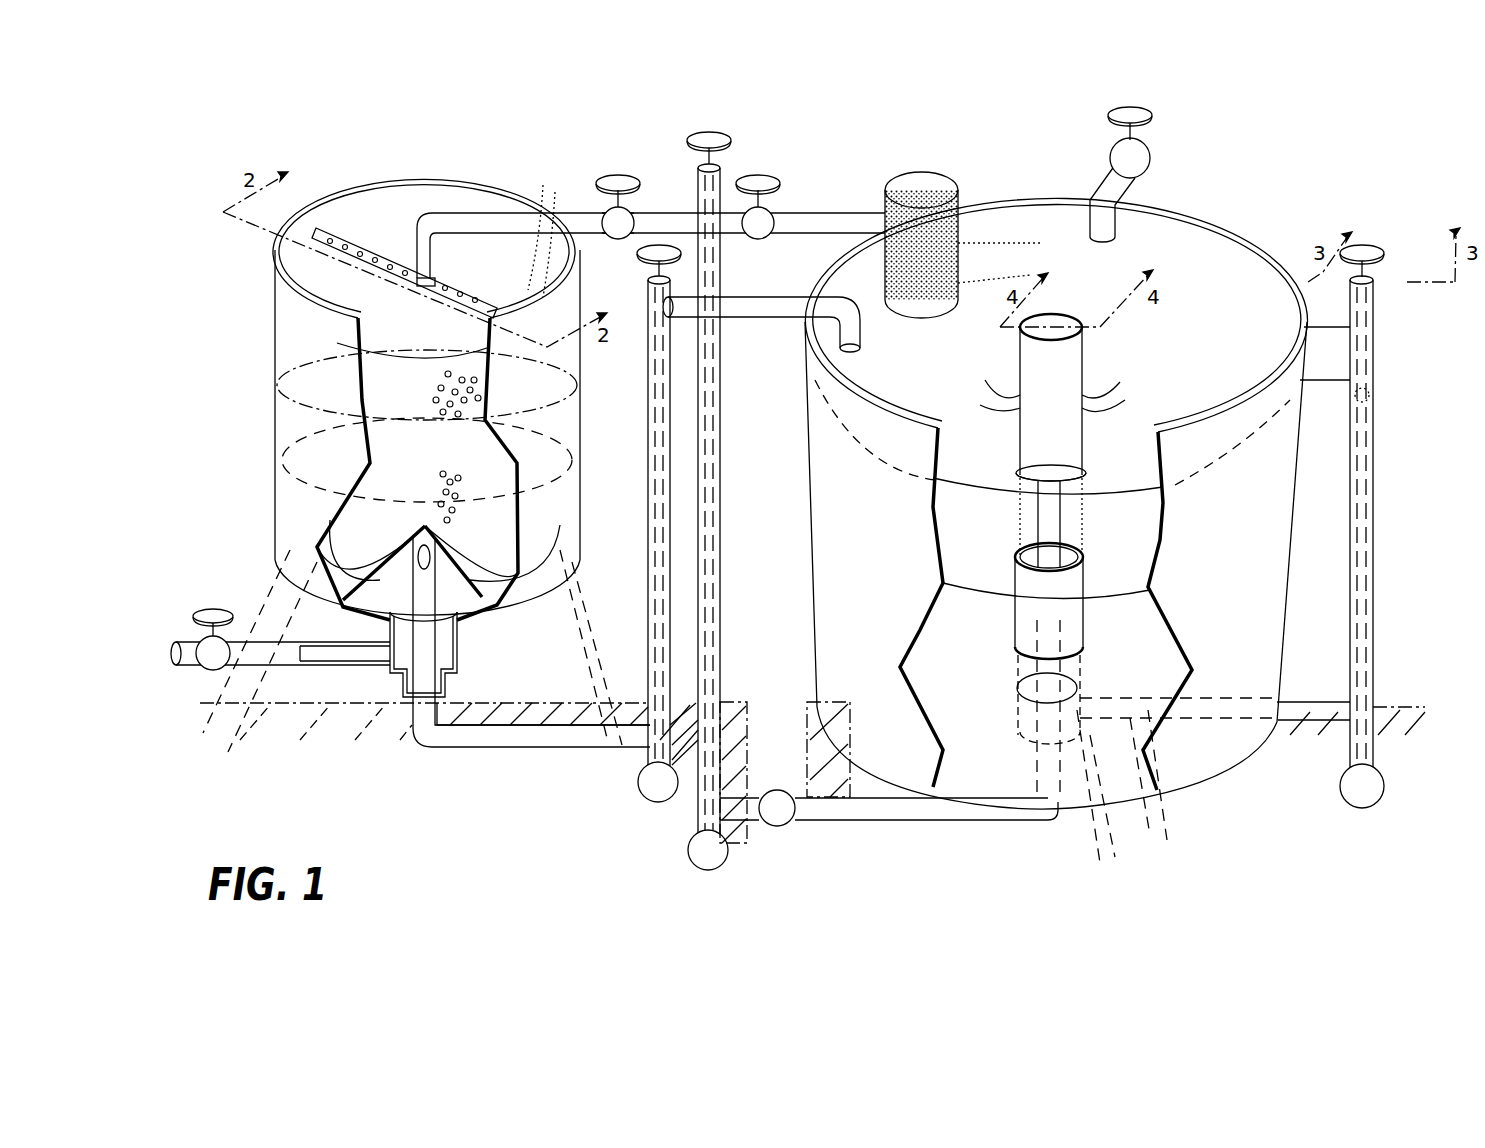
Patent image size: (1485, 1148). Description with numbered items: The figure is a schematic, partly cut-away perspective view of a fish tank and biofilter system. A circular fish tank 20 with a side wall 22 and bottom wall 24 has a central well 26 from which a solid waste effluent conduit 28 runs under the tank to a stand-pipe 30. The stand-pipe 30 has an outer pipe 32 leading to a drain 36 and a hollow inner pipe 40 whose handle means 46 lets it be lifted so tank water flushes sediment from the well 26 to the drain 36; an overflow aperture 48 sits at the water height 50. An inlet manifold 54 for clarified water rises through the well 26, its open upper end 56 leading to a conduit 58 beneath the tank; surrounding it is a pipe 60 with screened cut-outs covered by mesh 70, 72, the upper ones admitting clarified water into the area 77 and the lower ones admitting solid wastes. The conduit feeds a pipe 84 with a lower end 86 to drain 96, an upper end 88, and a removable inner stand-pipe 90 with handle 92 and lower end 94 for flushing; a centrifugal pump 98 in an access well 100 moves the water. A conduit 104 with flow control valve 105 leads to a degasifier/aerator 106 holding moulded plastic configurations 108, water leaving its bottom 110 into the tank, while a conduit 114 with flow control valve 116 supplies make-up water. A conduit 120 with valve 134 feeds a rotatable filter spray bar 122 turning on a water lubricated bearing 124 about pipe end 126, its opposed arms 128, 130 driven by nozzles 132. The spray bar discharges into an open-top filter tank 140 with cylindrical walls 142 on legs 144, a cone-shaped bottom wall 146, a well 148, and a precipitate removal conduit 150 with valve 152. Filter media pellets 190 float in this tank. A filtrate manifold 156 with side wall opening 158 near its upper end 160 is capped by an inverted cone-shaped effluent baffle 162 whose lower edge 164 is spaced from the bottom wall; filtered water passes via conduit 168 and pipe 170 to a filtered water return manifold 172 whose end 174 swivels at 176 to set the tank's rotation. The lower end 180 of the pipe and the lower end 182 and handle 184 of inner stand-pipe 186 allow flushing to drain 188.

The fish tank 20 is at (1217, 204).
The side wall 22 is at (1010, 228).
The bottom wall 24 is at (1228, 770).
The central well 26 is at (1100, 858).
The solid waste effluent conduit 28 is at (1167, 835).
The stand-pipe 30 is at (1387, 511).
The outer pipe 32 is at (1375, 445).
The drain 36 is at (1360, 800).
The inner pipe 40 is at (1375, 330).
The handle means 46 is at (1368, 247).
The overflow aperture 48 is at (1370, 395).
The height of water 50 is at (1230, 293).
The inlet manifold 54 is at (1020, 675).
The open upper end 56 is at (1085, 580).
The conduit 58 is at (920, 815).
The pipe 60 is at (1070, 445).
The screen or mesh 70 is at (1060, 520).
The screen or mesh 72 is at (1075, 675).
The area 77 is at (1085, 640).
The pipe 84 is at (722, 585).
The lower end 86 is at (720, 833).
The upper end 88 is at (722, 170).
The inner stand-pipe 90 is at (722, 520).
The handle 92 is at (712, 130).
The lower end 94 is at (690, 825).
The drain 96 is at (700, 858).
The centrifugal pump 98 is at (767, 793).
The access well 100 is at (758, 740).
The conduit 104 is at (810, 218).
The flow control valve 105 is at (768, 178).
The degasifier/aerator 106 is at (900, 185).
The moulded plastic configurations 108 is at (1045, 248).
The bottom 110 is at (912, 312).
The conduit 114 is at (1095, 220).
The flow control valve 116 is at (1107, 150).
The conduit 120 is at (672, 213).
The filter spray bar 122 is at (385, 242).
The water lubricated bearing 124 is at (440, 237).
The pipe end 126 is at (422, 218).
The arm 128 is at (340, 232).
The arm 130 is at (470, 302).
The nozzles 132 is at (219, 250).
The valve 134 is at (604, 178).
The filter tank 140 is at (258, 322).
The cylindrical walls 142 is at (273, 462).
The legs 144 is at (558, 627).
The cone-shaped bottom wall 146 is at (395, 660).
The well 148 is at (457, 650).
The precipitate removal conduit 150 is at (290, 660).
The valve 152 is at (198, 617).
The filtrate manifold 156 is at (405, 690).
The side wall opening 158 is at (400, 533).
The upper end 160 is at (363, 530).
The effluent baffle 162 is at (418, 557).
The lower edge 164 is at (417, 593).
The conduit 168 is at (470, 747).
The pipe 170 is at (648, 560).
The filtered water return manifold 172 is at (790, 318).
The end 174 is at (800, 340).
The swivel 176 is at (815, 292).
The lower end 180 is at (648, 792).
The lower end 182 is at (640, 768).
The handle 184 is at (650, 262).
The inner stand-pipe 186 is at (675, 447).
The drain 188 is at (647, 790).
The filter media pellets 190 is at (380, 383).